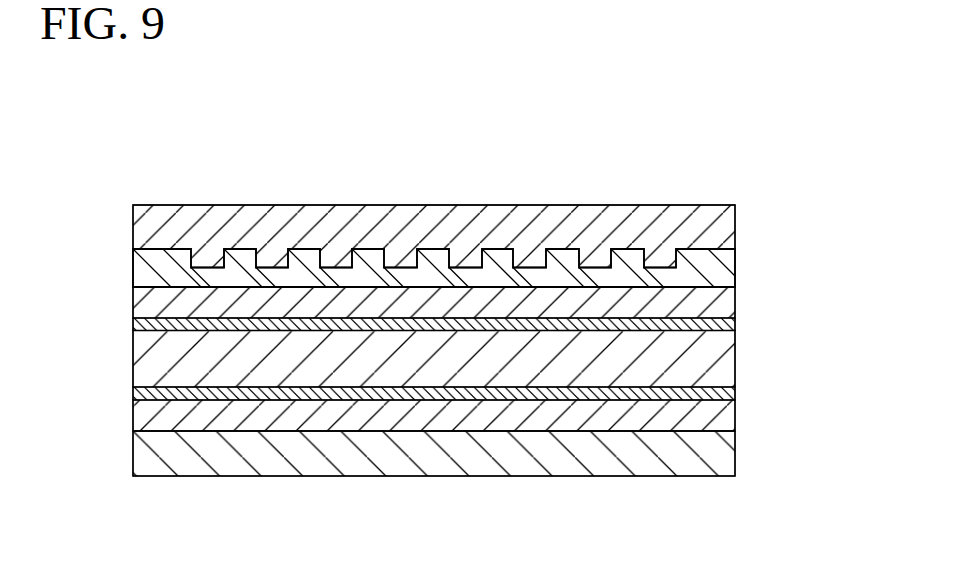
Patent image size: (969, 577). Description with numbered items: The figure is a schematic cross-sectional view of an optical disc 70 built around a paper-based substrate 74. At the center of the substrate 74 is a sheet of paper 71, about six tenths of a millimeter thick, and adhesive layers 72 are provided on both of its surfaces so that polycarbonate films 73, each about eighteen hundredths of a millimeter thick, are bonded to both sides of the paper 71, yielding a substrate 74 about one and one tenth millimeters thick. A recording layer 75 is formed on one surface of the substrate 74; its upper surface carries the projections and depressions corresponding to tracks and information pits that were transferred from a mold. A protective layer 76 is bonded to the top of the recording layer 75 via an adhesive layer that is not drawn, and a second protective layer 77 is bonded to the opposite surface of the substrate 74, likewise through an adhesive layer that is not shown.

The optical disc 70 is at (441, 169).
The sheet of paper 71 is at (735, 362).
The adhesive layers 72 is at (735, 323).
The polycarbonate films 73 is at (735, 295).
The substrate 74 is at (820, 282).
The recording layer 75 is at (735, 267).
The protective layer 76 is at (735, 223).
The protective layer 77 is at (735, 448).